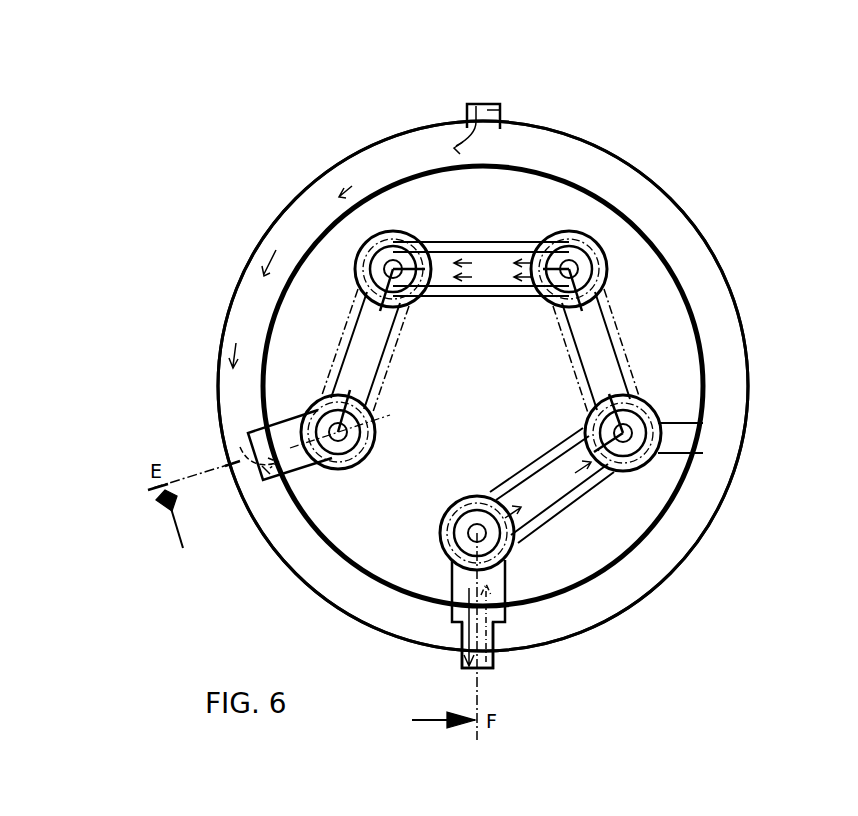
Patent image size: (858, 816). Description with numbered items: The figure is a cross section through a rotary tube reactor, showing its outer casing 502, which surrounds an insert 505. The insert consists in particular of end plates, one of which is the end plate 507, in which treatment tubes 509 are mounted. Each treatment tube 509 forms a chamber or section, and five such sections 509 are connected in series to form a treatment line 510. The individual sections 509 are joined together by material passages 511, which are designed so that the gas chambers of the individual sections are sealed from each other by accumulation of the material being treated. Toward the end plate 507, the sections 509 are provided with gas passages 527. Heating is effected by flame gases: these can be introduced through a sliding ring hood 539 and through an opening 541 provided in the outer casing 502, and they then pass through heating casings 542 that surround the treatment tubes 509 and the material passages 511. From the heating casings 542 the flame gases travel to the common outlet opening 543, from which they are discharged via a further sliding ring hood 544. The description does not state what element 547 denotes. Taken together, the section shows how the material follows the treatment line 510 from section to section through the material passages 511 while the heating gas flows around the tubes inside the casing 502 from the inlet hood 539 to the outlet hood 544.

The outer casing 502 is at (598, 141).
The insert 505 is at (545, 166).
The end plate 507 is at (636, 255).
The treatment tube 509 is at (395, 262).
The treatment line 510 is at (630, 329).
The material passage 511 is at (475, 258).
The gas passage 527 is at (703, 453).
The sliding ring hood 539 is at (410, 151).
The opening 541 is at (260, 476).
The heating casing 542 is at (703, 423).
The common outlet opening 543 is at (500, 623).
The sliding ring hood 544 is at (459, 662).
The casing 547 is at (700, 511).